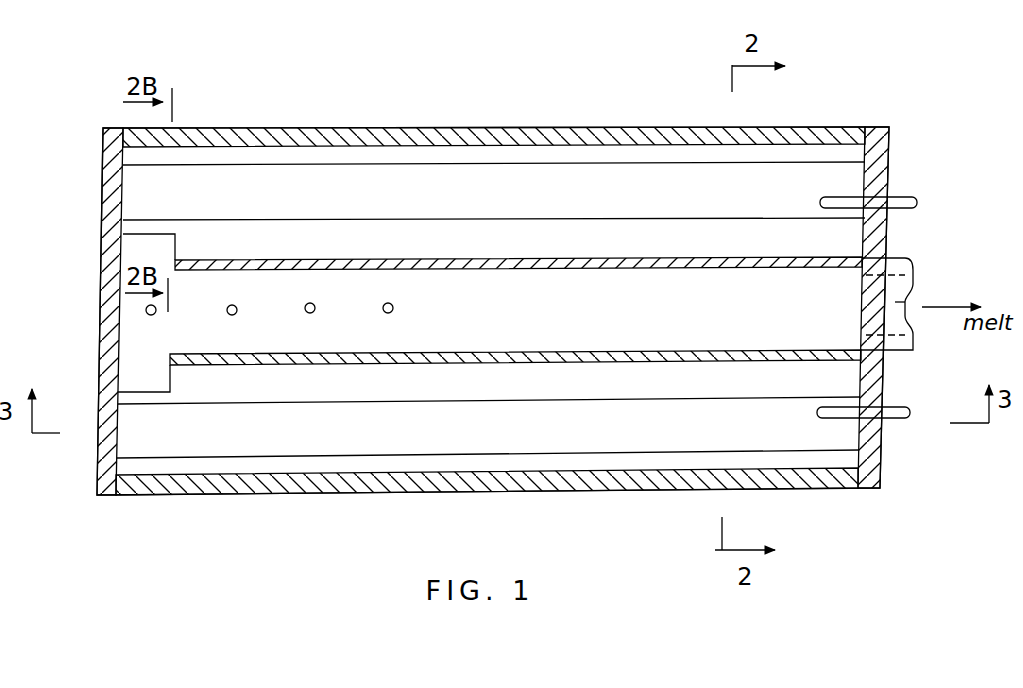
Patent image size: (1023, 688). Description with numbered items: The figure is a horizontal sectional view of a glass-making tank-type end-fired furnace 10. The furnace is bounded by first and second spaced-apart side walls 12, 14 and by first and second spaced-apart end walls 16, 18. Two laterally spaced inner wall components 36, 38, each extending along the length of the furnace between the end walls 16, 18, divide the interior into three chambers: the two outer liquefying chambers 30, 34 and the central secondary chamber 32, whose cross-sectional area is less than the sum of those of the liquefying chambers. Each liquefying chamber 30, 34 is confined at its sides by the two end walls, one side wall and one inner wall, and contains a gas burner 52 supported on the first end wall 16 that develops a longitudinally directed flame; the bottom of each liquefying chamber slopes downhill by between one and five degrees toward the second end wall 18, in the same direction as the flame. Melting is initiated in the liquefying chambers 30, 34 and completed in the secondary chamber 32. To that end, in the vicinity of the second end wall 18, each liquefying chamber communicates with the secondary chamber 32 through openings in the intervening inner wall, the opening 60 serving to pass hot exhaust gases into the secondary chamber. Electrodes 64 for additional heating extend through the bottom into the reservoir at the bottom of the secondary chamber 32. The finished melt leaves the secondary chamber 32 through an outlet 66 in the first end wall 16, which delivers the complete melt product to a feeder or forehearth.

The glass-making tank-type end-fired furnace 10 is at (498, 504).
The first side wall 12 is at (405, 128).
The second side wall 14 is at (382, 486).
The first end wall 16 is at (889, 232).
The second end wall 18 is at (100, 270).
The first liquefying chamber 30 is at (558, 182).
The secondary chamber 32 is at (518, 311).
The second liquefying chamber 34 is at (627, 438).
The first inner wall component 36 is at (718, 262).
The second inner wall component 38 is at (646, 352).
The gas burner 52 is at (838, 200).
The opening 60 is at (158, 255).
The electrodes 64 is at (384, 315).
The outlet 66 is at (913, 297).